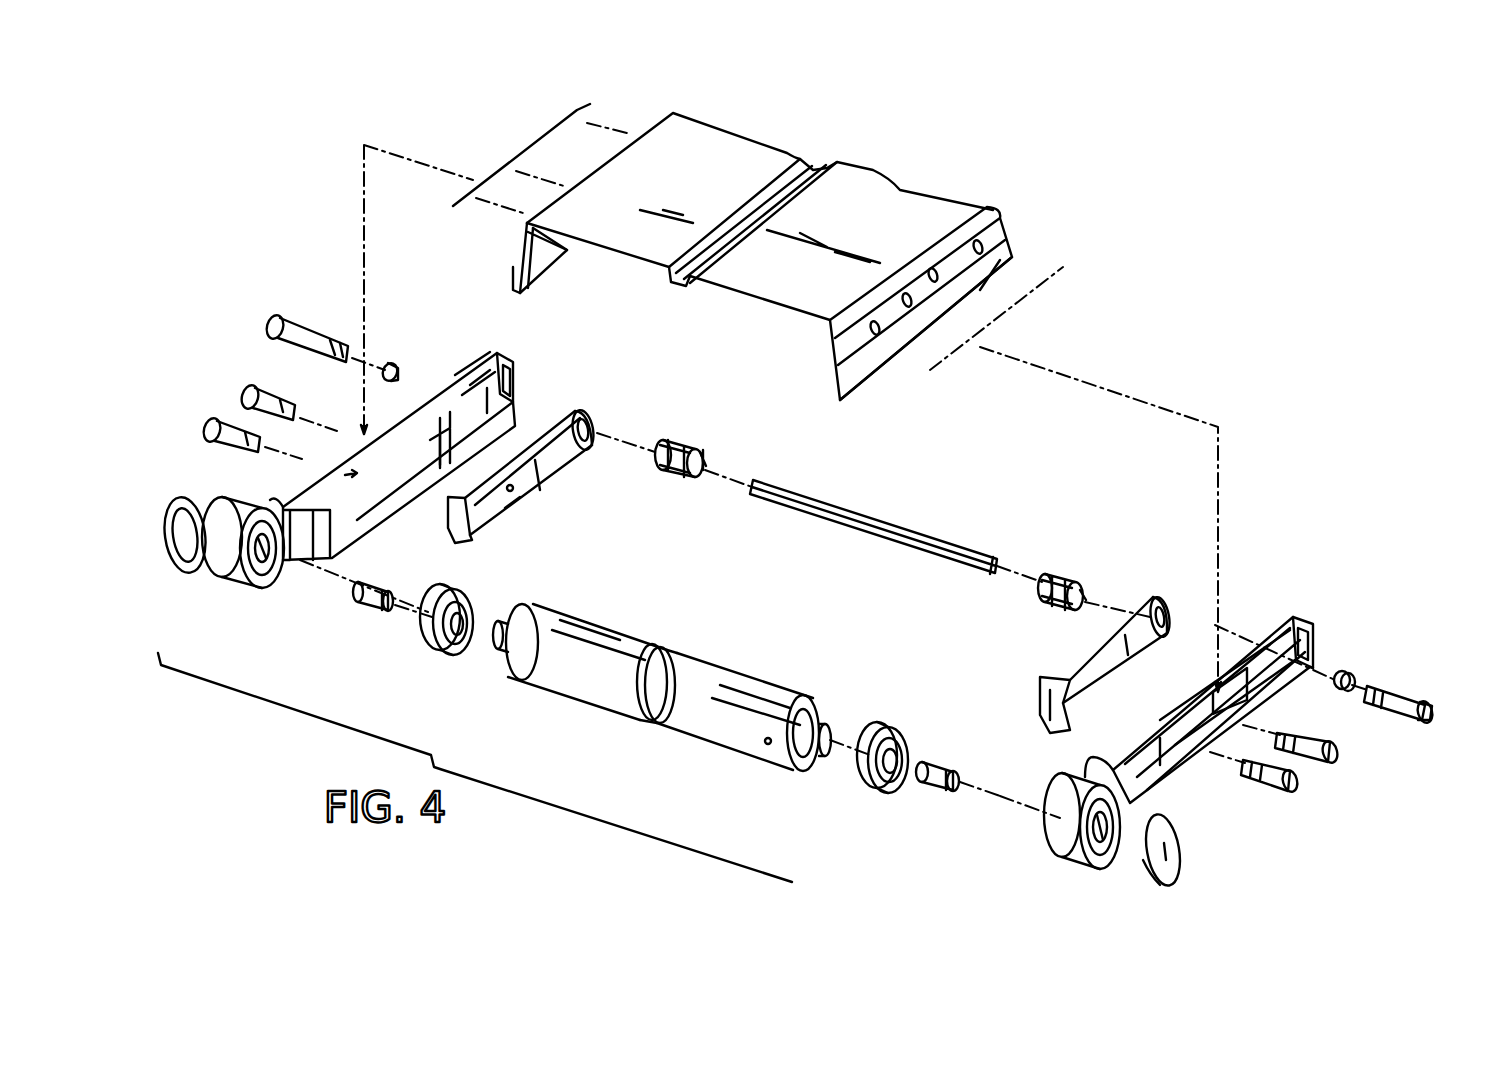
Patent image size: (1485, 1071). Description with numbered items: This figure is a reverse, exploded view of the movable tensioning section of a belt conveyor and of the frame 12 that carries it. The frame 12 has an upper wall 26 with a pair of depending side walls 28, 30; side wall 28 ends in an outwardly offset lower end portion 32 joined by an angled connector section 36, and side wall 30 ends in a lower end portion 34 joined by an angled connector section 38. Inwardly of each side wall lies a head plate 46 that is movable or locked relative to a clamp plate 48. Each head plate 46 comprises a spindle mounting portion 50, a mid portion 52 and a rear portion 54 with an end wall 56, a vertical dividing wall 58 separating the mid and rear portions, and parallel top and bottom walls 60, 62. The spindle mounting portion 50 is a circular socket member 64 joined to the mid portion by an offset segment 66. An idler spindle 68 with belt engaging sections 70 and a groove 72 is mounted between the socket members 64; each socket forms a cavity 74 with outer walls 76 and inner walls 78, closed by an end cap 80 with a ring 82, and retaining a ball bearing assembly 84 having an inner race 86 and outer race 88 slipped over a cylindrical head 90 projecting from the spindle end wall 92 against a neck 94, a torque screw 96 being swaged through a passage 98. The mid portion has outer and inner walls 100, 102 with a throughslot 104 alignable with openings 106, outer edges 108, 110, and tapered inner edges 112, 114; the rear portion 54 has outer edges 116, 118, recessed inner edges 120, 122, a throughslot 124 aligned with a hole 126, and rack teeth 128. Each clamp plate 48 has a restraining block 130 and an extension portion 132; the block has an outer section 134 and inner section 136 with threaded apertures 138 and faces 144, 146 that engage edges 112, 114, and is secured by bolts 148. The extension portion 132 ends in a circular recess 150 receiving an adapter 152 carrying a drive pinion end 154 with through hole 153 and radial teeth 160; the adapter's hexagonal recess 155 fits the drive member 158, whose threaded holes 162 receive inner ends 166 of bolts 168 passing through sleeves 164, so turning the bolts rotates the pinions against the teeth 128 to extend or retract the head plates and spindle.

The frame 12 is at (886, 152).
The upper wall 26 is at (768, 250).
The side wall 28 is at (520, 225).
The side wall 30 is at (995, 218).
The lower end portion 32 is at (514, 289).
The lower end portion 34 is at (1010, 270).
The angled connector section 36 is at (513, 265).
The angled connector section 38 is at (1010, 250).
The head plate 46 is at (530, 362).
The clamp plate 48 is at (595, 398).
The spindle mounting portion 50 is at (351, 486).
The mid portion 52 is at (397, 427).
The rear portion 54 is at (497, 386).
The end wall 56 is at (510, 375).
The vertical dividing wall 58 is at (452, 392).
The top wall 60 is at (362, 445).
The bottom wall 62 is at (352, 522).
The circular socket member 64 is at (235, 522).
The offset segment 66 is at (287, 505).
The idler spindle 68 is at (676, 693).
The belt engaging sections 70 is at (600, 635).
The groove 72 is at (665, 655).
The cavity 74 is at (248, 568).
The outer walls 76 is at (1105, 855).
The inner walls 78 is at (265, 565).
The end cap 80 is at (190, 500).
The ring 82 is at (200, 548).
The spherical ball bearing assembly 84 is at (440, 632).
The inner race 86 is at (455, 640).
The outer race 88 is at (458, 600).
The cylindrical head 90 is at (503, 655).
The end wall 92 is at (825, 715).
The circular neck 94 is at (805, 760).
The torque screw 96 is at (368, 604).
The passage 98 is at (766, 745).
The outer wall 100 is at (285, 560).
The inner wall 102 is at (1140, 765).
The throughslot 104 is at (466, 432).
The openings 106 is at (873, 322).
The upper outer edge 108 is at (1205, 705).
The lower outer edge 110 is at (1180, 775).
The upper inner edge 112 is at (350, 458).
The lower inner edge 114 is at (440, 470).
The upper outer edge 116 is at (1278, 620).
The lower outer edge 118 is at (1305, 672).
The upper inner edge 120 is at (462, 380).
The lower inner edge 122 is at (510, 413).
The throughslot 124 is at (1262, 650).
The hole 126 is at (975, 240).
The gear teeth 128 is at (500, 404).
The restraining block 130 is at (545, 480).
The extension portion 132 is at (521, 475).
The outer section 134 is at (452, 530).
The inner section 136 is at (468, 538).
The threaded apertures 138 is at (515, 505).
The upper vertical face 144 is at (1118, 645).
The lower vertical face 146 is at (1052, 728).
The bolts 148 is at (205, 430).
The circular recess 150 is at (588, 425).
The adapter 152 is at (683, 445).
The through hole 153 is at (1086, 592).
The drive pinion end 154 is at (670, 433).
The hexagonal interior recess 155 is at (710, 462).
The drive member 158 is at (870, 505).
The radial teeth 160 is at (675, 478).
The threaded holes 162 is at (1000, 575).
The sleeves 164 is at (390, 362).
The inner ends 166 is at (335, 340).
The bolts 168 is at (270, 325).